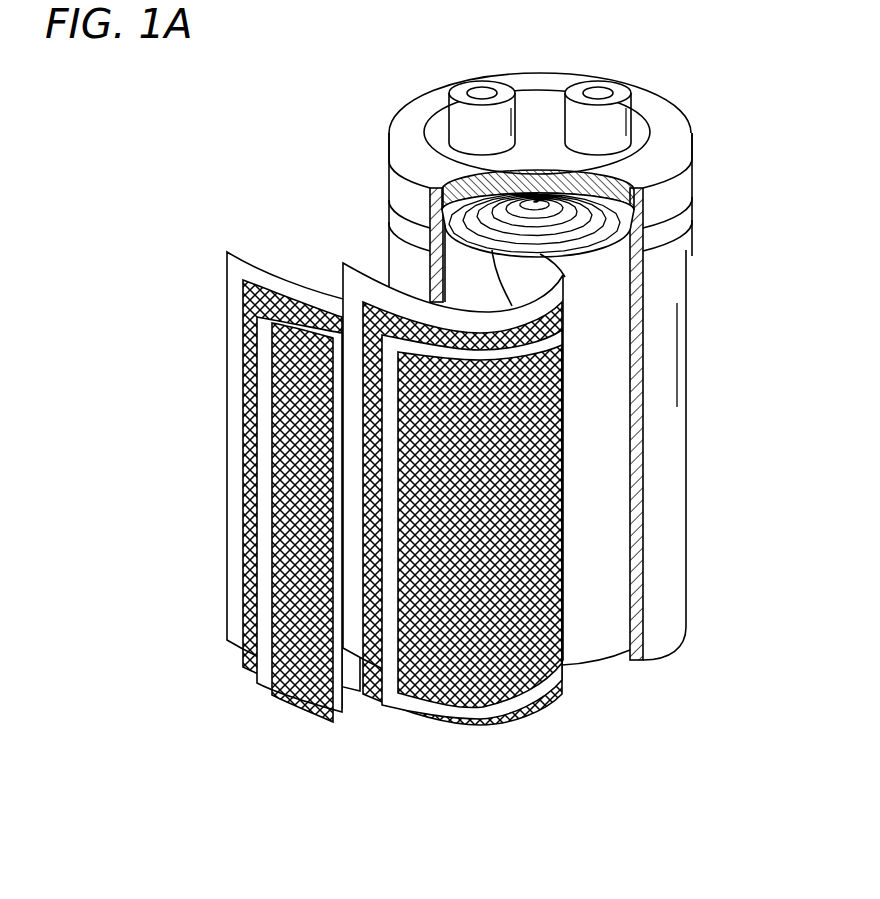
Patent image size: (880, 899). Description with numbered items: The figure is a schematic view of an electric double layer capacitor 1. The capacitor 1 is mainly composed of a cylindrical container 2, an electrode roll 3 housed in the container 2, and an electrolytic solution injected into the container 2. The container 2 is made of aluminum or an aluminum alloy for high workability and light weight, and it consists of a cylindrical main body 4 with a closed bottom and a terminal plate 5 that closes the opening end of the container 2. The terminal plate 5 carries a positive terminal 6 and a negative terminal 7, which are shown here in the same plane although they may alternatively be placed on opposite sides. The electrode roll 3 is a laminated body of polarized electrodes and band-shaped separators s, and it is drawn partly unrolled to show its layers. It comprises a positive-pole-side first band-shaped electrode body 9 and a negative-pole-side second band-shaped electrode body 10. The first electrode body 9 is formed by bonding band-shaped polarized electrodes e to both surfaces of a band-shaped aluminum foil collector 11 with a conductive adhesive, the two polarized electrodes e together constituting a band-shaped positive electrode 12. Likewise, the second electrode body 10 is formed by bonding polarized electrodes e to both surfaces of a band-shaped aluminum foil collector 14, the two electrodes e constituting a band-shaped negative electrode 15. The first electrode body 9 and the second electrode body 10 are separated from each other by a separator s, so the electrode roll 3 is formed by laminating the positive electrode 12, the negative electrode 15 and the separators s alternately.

The electric double layer capacitor 1 is at (580, 338).
The container 2 is at (686, 430).
The electrode roll 3 is at (603, 498).
The main body 4 is at (668, 352).
The terminal plate 5 is at (434, 134).
The positive terminal 6 is at (456, 82).
The negative terminal 7 is at (613, 82).
The first band-shaped electrode body 9 is at (224, 533).
The second band-shaped electrode body 10 is at (389, 587).
The band-shaped collector 11 is at (258, 602).
The band-shaped positive electrode 12 is at (272, 544).
The band-shaped collector 14 is at (390, 577).
The band-shaped negative electrode 15 is at (363, 780).
The separator s is at (236, 288).
The polarized electrode e is at (237, 650).